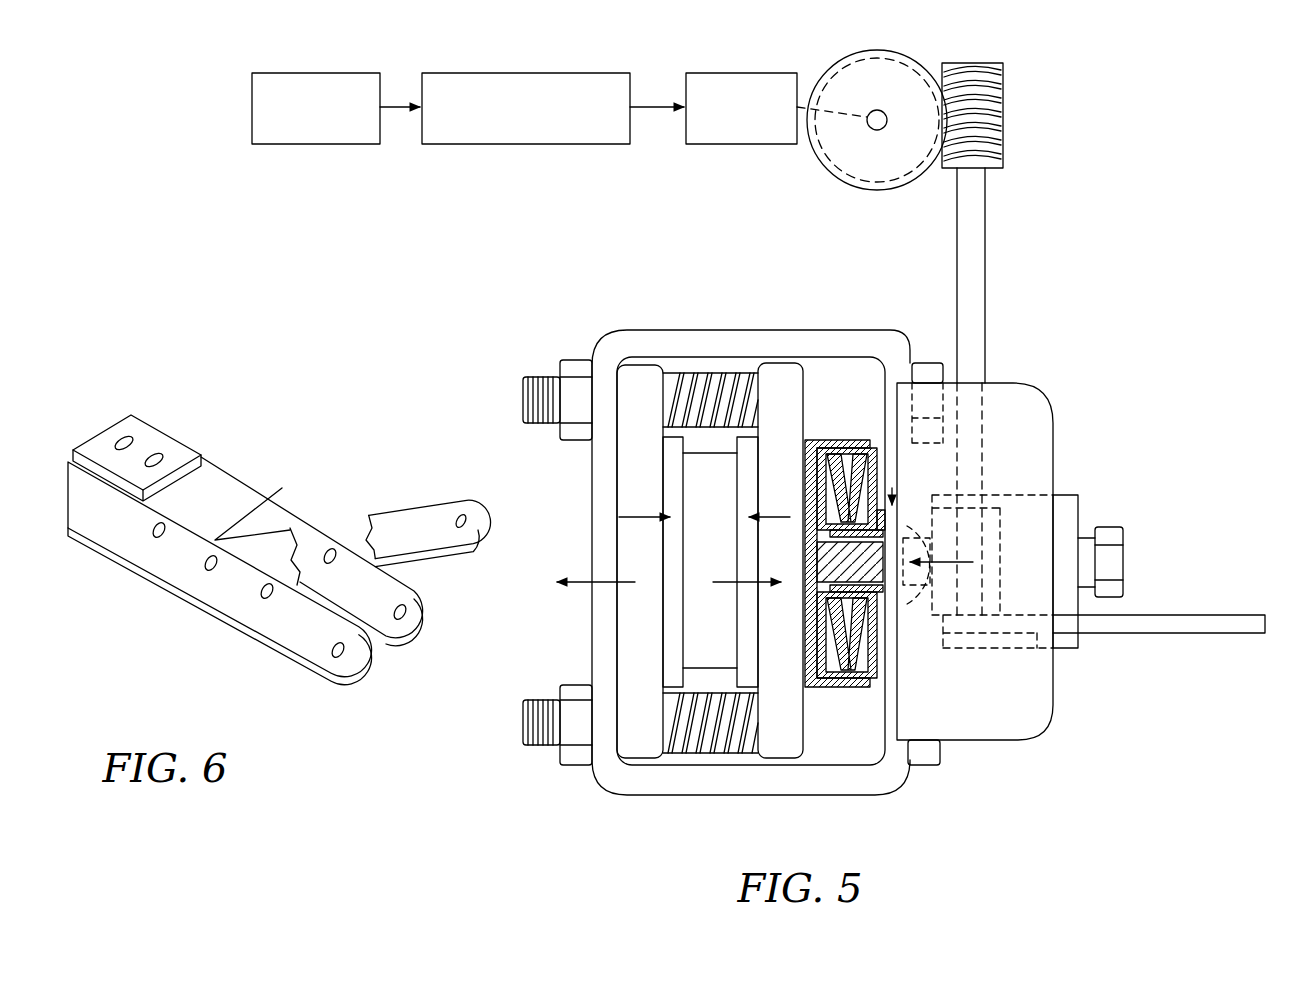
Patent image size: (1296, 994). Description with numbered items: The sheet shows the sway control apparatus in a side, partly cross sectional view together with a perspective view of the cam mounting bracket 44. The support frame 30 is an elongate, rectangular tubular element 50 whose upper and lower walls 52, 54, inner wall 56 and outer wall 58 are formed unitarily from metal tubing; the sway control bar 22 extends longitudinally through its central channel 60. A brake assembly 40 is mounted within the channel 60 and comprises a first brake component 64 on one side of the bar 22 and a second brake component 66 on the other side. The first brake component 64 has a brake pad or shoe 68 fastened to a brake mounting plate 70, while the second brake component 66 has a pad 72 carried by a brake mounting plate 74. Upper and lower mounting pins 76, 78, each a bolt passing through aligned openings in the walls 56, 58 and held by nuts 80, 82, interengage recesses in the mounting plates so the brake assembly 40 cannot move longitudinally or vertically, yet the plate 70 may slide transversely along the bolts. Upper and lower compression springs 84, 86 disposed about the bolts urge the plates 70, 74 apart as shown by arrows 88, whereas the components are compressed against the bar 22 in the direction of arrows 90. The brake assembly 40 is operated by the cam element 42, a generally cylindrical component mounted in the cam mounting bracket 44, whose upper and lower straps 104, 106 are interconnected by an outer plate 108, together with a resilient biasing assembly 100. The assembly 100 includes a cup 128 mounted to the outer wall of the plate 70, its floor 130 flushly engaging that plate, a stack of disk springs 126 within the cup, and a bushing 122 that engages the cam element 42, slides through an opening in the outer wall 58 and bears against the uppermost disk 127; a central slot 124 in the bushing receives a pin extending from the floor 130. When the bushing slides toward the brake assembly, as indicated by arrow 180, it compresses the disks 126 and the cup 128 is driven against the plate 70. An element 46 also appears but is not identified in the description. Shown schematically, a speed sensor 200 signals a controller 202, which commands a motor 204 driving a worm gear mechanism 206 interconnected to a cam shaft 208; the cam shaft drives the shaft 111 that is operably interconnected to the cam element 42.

In FIG. 5, the speed sensor 200 is at (358, 73).
In FIG. 5, the controller 202 is at (590, 73).
In FIG. 5, the motor 204 is at (755, 73).
In FIG. 5, the worm gear mechanism 206 is at (907, 50).
In FIG. 5, the cam shaft 208 is at (985, 203).
In FIG. 5, the support frame 30 is at (637, 795).
In FIG. 5, the tubular element 50 is at (673, 797).
In FIG. 5, the upper wall 52 is at (657, 328).
In FIG. 5, the lower wall 54 is at (708, 797).
In FIG. 5, the inner wall 56 is at (625, 645).
In FIG. 5, the outer wall 58 is at (890, 673).
In FIG. 5, the central channel 60 is at (703, 443).
In FIG. 5, the first brake component 64 is at (775, 363).
In FIG. 5, the second brake component 66 is at (615, 345).
In FIG. 5, the brake pad 68 is at (747, 662).
In FIG. 5, the brake mounting plate 70 is at (795, 727).
In FIG. 5, the pad 72 is at (665, 543).
In FIG. 5, the brake mounting plate 74 is at (630, 443).
In FIG. 5, the upper mounting pin 76 is at (523, 390).
In FIG. 5, the lower mounting pin 78 is at (540, 753).
In FIG. 5, the nut 80 is at (575, 360).
In FIG. 5, the nut 82 is at (578, 765).
In FIG. 5, the upper compression spring 84 is at (697, 372).
In FIG. 5, the lower compression spring 86 is at (745, 757).
In FIG. 5, the arrows 88 is at (728, 582).
In FIG. 5, the arrows 90 is at (617, 517).
In FIG. 5, the sway control bar 22 is at (702, 628).
In FIG. 5, the brake assembly 40 is at (812, 368).
In FIG. 5, the resilient biasing assembly 100 is at (897, 478).
In FIG. 5, the shaft 111 is at (1000, 556).
In FIG. 5, the bushing 122 is at (907, 505).
In FIG. 5, the central slot 124 is at (908, 637).
In FIG. 5, the disk springs 126 is at (850, 447).
In FIG. 5, the uppermost disk 127 is at (872, 460).
In FIG. 5, the cup 128 is at (843, 687).
In FIG. 5, the floor 130 is at (808, 453).
In FIG. 5, the arrow 180 is at (972, 560).
In FIG. 5, the cam element 42 is at (1003, 597).
In FIG. 6, the cam element 42 is at (264, 516).
In FIG. 5, the connecting rod 46 is at (1200, 615).
In FIG. 6, the connecting rod 46 is at (423, 556).
In FIG. 6, the cam mounting bracket 44 is at (70, 510).
In FIG. 6, the upper strap 104 is at (362, 546).
In FIG. 6, the lower strap 106 is at (299, 637).
In FIG. 6, the outer plate 108 is at (100, 430).